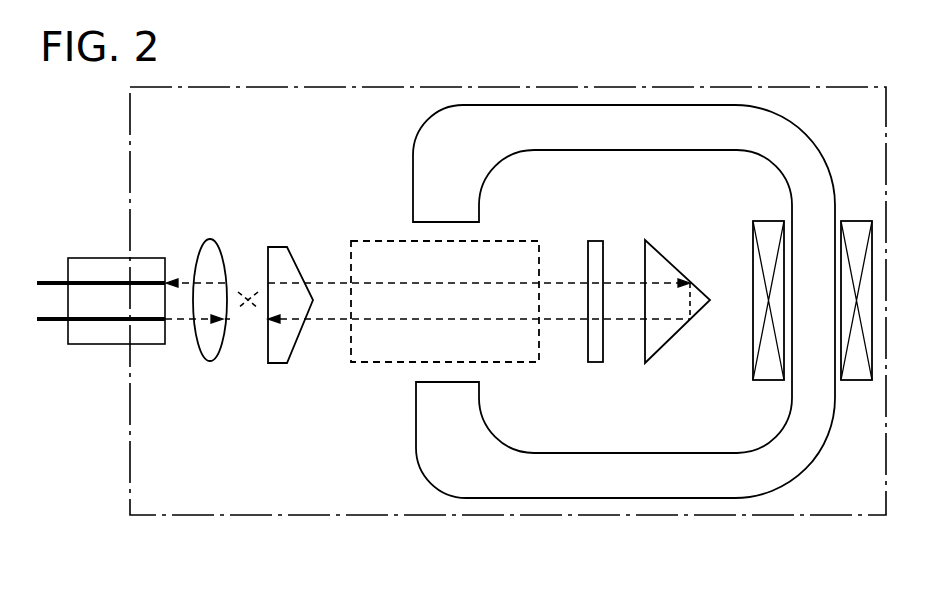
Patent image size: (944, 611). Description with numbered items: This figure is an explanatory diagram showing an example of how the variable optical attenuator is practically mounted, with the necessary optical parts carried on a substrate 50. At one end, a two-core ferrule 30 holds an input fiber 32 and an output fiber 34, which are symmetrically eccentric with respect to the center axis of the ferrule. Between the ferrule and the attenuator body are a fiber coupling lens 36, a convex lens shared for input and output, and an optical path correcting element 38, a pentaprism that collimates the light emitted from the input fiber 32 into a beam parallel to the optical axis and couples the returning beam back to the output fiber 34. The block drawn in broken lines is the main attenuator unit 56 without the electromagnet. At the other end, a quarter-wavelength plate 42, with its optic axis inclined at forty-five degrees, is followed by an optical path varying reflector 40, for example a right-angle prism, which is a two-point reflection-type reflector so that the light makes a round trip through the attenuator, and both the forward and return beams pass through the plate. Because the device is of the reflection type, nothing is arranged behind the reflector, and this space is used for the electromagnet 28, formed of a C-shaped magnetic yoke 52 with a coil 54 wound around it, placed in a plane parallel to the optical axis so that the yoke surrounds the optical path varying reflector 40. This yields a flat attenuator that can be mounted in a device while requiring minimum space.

The electromagnet 28 is at (411, 143).
The two-core ferrule 30 is at (147, 340).
The input fiber 32 is at (113, 322).
The output fiber 34 is at (113, 280).
The fiber coupling lens 36 is at (202, 263).
The optical path correcting element 38 is at (278, 352).
The optical path varying reflector 40 is at (672, 335).
The quarter-wavelength plate 42 is at (588, 350).
The substrate 50 is at (308, 507).
The C-shaped magnetic yoke 52 is at (650, 137).
The coil 54 is at (858, 372).
The main attenuator unit without the electromagnet 56 is at (385, 345).